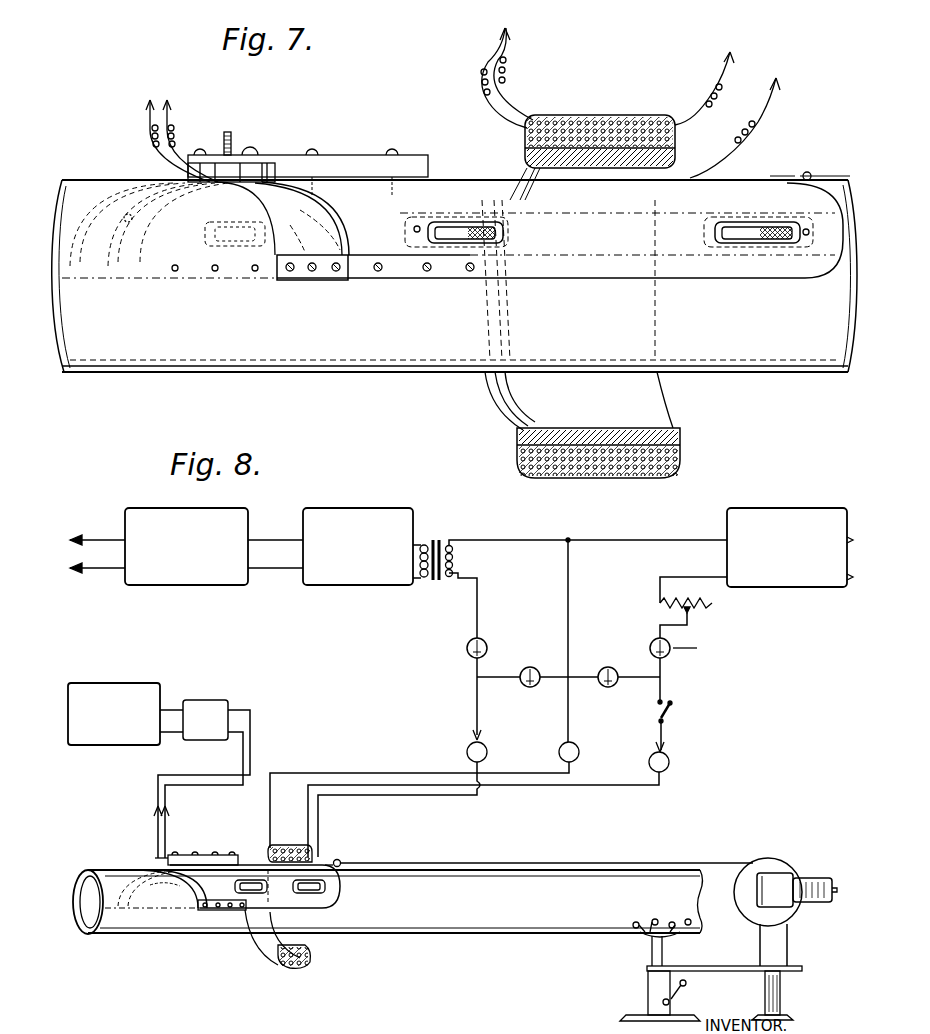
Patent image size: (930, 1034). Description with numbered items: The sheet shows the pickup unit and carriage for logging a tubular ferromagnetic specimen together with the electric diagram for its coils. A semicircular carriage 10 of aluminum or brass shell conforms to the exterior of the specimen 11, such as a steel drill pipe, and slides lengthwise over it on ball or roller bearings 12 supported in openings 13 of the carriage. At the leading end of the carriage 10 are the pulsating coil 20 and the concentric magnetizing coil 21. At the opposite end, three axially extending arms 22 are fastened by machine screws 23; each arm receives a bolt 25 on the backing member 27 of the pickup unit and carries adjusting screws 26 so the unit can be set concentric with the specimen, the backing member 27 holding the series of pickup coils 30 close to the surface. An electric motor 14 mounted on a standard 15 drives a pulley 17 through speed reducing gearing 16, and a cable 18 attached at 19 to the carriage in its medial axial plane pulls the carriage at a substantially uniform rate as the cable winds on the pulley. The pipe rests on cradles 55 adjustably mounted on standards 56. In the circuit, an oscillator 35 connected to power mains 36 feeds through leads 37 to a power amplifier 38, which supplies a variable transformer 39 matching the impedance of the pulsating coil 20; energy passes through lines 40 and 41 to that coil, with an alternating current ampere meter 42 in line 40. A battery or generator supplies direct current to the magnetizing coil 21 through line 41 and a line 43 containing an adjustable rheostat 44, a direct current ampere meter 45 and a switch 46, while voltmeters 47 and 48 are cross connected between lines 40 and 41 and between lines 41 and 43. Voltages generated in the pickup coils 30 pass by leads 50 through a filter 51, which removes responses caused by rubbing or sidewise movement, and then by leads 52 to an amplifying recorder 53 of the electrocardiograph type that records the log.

In FIG. 7, the carriage 10 is at (440, 193).
In FIG. 8, the carriage 10 is at (340, 898).
In FIG. 7, the specimen 11 is at (146, 352).
In FIG. 8, the specimen 11 is at (463, 920).
In FIG. 7, the ball or roller bearings 12 is at (472, 226).
In FIG. 7, the openings 13 is at (505, 232).
In FIG. 8, the electric motor 14 is at (815, 878).
In FIG. 8, the standard 15 is at (790, 952).
In FIG. 8, the speed reducing gearing 16 is at (785, 880).
In FIG. 8, the pulley 17 is at (768, 860).
In FIG. 8, the cable 18 is at (588, 864).
In FIG. 8, the cable attachment point 19 is at (334, 861).
In FIG. 7, the pulsating coil 20 is at (660, 410).
In FIG. 8, the pulsating coil 20 is at (306, 948).
In FIG. 7, the magnetizing coil 21 is at (675, 462).
In FIG. 8, the magnetizing coil 21 is at (298, 968).
In FIG. 7, the axially extending arms 22 is at (340, 160).
In FIG. 8, the axially extending arms 22 is at (221, 857).
In FIG. 7, the machine screws 23 is at (468, 273).
In FIG. 7, the bolt 25 is at (232, 150).
In FIG. 7, the adjusting screws 26 is at (268, 132).
In FIG. 7, the backing member 27 is at (325, 242).
In FIG. 8, the backing member 27 is at (222, 912).
In FIG. 7, the pickup coils 30 is at (327, 220).
In FIG. 8, the oscillator 35 is at (196, 497).
In FIG. 8, the power mains 36 is at (121, 540).
In FIG. 8, the leads 37 is at (278, 568).
In FIG. 8, the power amplifier 38 is at (385, 525).
In FIG. 8, the transformer 39 is at (438, 541).
In FIG. 7, the line 40 is at (727, 68).
In FIG. 8, the line 40 is at (478, 618).
In FIG. 7, the line 41 is at (500, 96).
In FIG. 8, the line 41 is at (566, 578).
In FIG. 8, the alternating current ampere meter 42 is at (786, 508).
In FIG. 7, the line 43 is at (768, 98).
In FIG. 8, the line 43 is at (682, 577).
In FIG. 8, the adjustable rheostat 44 is at (712, 603).
In FIG. 8, the direct current ampere meter 45 is at (670, 658).
In FIG. 8, the switch 46 is at (674, 712).
In FIG. 8, the voltmeter 47 is at (533, 665).
In FIG. 8, the voltmeter 48 is at (609, 665).
In FIG. 7, the leads 50 is at (150, 118).
In FIG. 8, the leads 50 is at (205, 778).
In FIG. 8, the filter 51 is at (210, 703).
In FIG. 8, the leads 52 is at (176, 732).
In FIG. 8, the amplifying recorder 53 is at (118, 686).
In FIG. 8, the cradles 55 is at (645, 936).
In FIG. 8, the standards 56 is at (647, 995).